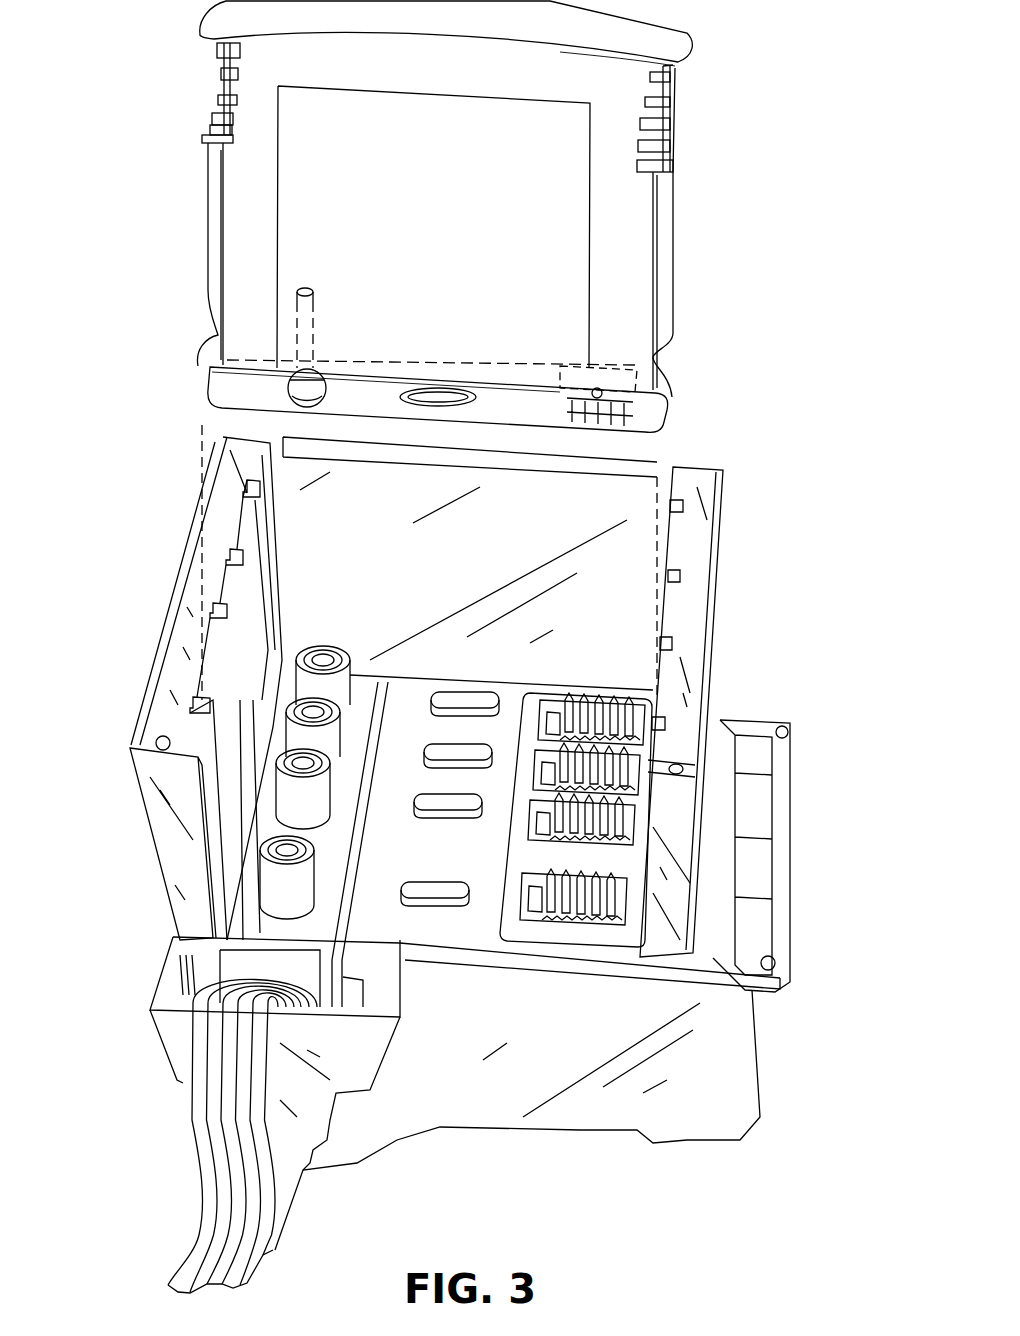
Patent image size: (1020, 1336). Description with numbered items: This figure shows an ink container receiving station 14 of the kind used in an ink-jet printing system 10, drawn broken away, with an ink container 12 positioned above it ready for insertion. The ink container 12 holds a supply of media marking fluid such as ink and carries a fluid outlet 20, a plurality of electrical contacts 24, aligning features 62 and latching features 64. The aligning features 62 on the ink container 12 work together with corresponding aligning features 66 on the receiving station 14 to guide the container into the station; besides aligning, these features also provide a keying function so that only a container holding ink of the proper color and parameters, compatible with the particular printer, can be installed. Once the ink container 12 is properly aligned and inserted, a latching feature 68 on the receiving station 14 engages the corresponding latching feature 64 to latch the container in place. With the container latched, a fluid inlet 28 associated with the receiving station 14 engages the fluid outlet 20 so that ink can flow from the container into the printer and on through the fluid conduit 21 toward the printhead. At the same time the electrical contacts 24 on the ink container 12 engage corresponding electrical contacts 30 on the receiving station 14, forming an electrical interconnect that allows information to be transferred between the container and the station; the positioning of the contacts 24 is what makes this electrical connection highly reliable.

The ink-jet printing system 10 is at (715, 1075).
The ink container 12 is at (441, 173).
The ink container receiving station 14 is at (718, 548).
The fluid outlet 20 is at (308, 395).
The fluid conduit 21 is at (192, 1135).
The electrical contacts 24 is at (592, 428).
The fluid inlet 28 is at (338, 720).
The electrical contacts 30 is at (570, 720).
The aligning features 62 is at (207, 385).
The latching features 64 is at (210, 345).
The aligning features 66 is at (245, 488).
The latching feature 68 is at (277, 625).